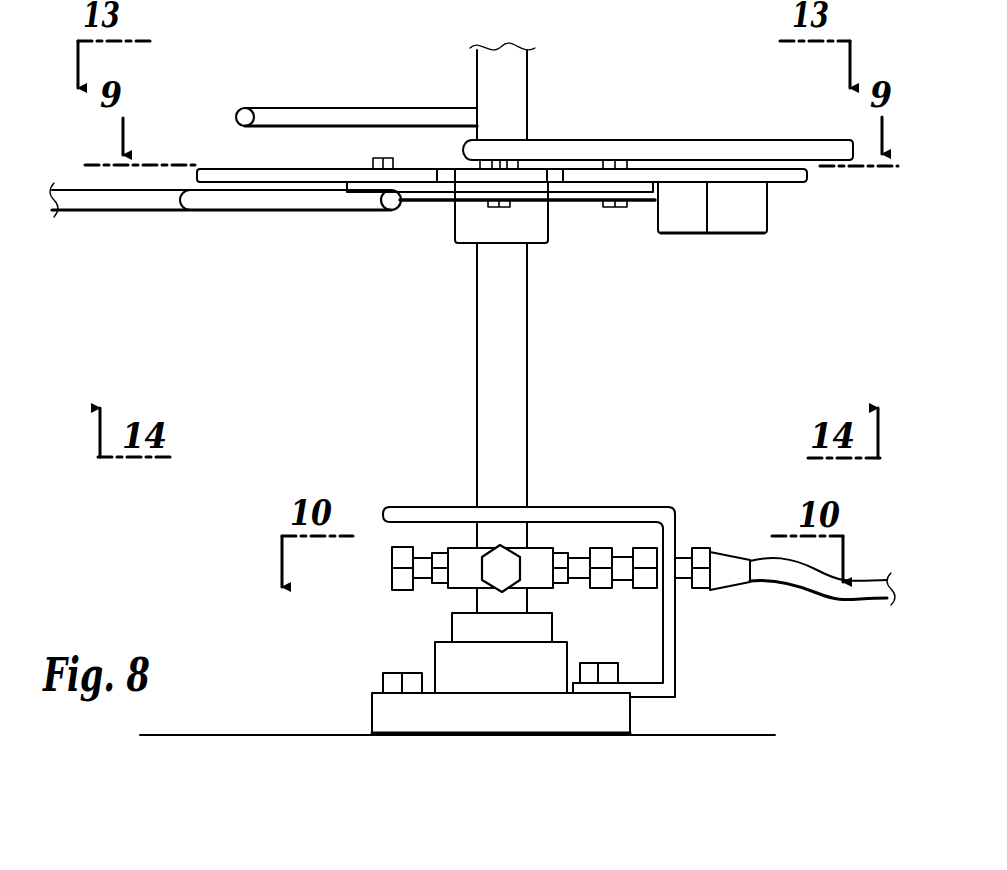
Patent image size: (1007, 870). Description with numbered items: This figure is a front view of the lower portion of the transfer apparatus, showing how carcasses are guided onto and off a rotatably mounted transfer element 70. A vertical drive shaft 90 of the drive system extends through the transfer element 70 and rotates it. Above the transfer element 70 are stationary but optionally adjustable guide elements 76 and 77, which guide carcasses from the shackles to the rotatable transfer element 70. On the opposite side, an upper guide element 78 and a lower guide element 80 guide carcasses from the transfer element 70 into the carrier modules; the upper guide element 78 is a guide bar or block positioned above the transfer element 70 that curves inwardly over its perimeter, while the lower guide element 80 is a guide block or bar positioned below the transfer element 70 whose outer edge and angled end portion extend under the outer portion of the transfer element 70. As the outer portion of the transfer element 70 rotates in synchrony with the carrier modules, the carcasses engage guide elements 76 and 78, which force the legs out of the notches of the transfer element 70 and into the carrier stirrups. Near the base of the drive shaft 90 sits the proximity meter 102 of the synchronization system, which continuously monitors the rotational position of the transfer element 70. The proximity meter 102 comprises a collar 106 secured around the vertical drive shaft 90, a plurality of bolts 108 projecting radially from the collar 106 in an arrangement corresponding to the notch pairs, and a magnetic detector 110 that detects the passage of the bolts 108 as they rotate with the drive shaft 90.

The transfer element 70 is at (288, 172).
The guide element 76 is at (236, 205).
The guide element 77 is at (243, 108).
The upper guide element 78 is at (687, 147).
The lower guide element 80 is at (707, 235).
The vertical drive shaft 90 is at (510, 377).
The proximity meter 102 is at (457, 582).
The collar 106 is at (543, 553).
The bolts 108 is at (605, 552).
The magnetic detector 110 is at (647, 577).